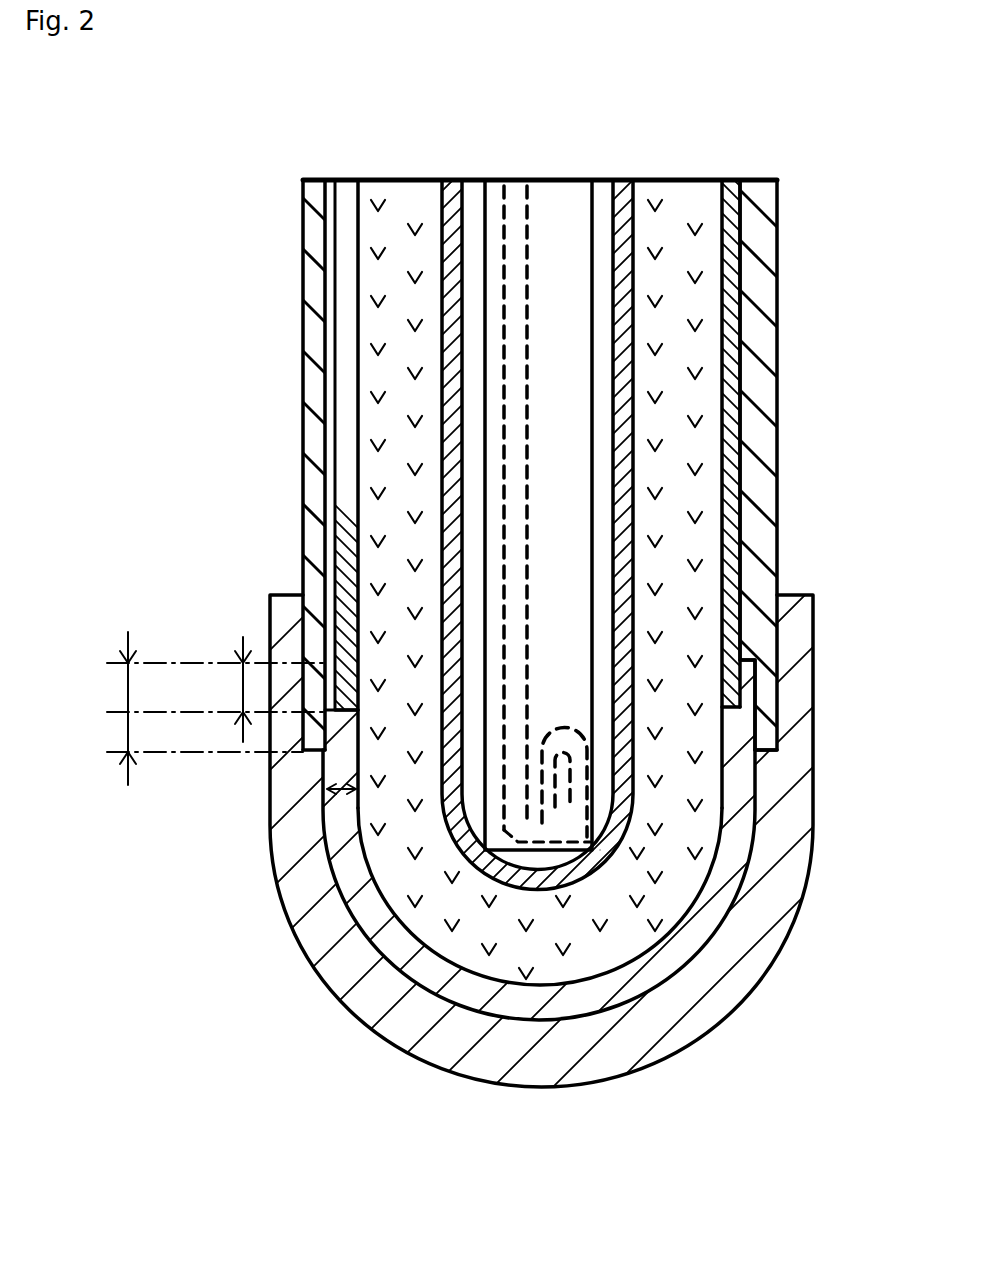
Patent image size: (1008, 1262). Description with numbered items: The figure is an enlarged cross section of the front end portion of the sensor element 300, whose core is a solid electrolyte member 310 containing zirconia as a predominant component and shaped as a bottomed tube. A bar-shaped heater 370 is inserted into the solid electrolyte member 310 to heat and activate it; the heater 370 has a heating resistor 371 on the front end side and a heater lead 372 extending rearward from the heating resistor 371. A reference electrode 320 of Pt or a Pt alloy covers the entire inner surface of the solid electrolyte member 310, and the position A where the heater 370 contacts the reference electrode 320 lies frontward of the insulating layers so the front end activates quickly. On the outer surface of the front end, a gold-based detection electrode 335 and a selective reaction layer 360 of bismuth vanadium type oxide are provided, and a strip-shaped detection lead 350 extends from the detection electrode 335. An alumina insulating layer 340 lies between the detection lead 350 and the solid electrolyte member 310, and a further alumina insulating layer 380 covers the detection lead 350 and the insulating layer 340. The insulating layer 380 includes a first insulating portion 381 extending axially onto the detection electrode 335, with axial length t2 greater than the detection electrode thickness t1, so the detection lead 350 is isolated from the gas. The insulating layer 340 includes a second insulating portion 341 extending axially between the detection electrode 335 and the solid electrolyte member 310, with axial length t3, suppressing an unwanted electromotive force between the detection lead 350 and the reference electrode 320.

The sensor element 300 is at (207, 214).
The solid electrolyte member 310 is at (370, 190).
The reference electrode 320 is at (448, 182).
The detection electrode 335 is at (688, 957).
The insulating layer 340 is at (345, 203).
The second insulating portion 341 is at (348, 683).
The detection lead 350 is at (330, 302).
The selective reaction layer 360 is at (290, 890).
The heater 370 is at (542, 228).
The heating resistor 371 is at (513, 838).
The heater lead 372 is at (513, 203).
The insulating layer 380 is at (322, 420).
The first insulating portion 381 is at (316, 688).
The position of contact A is at (600, 850).
The thickness of the detection electrode t1 is at (330, 800).
The axial length of the first insulating portion t2 is at (200, 708).
The axial length of the second insulating portion t3 is at (216, 689).